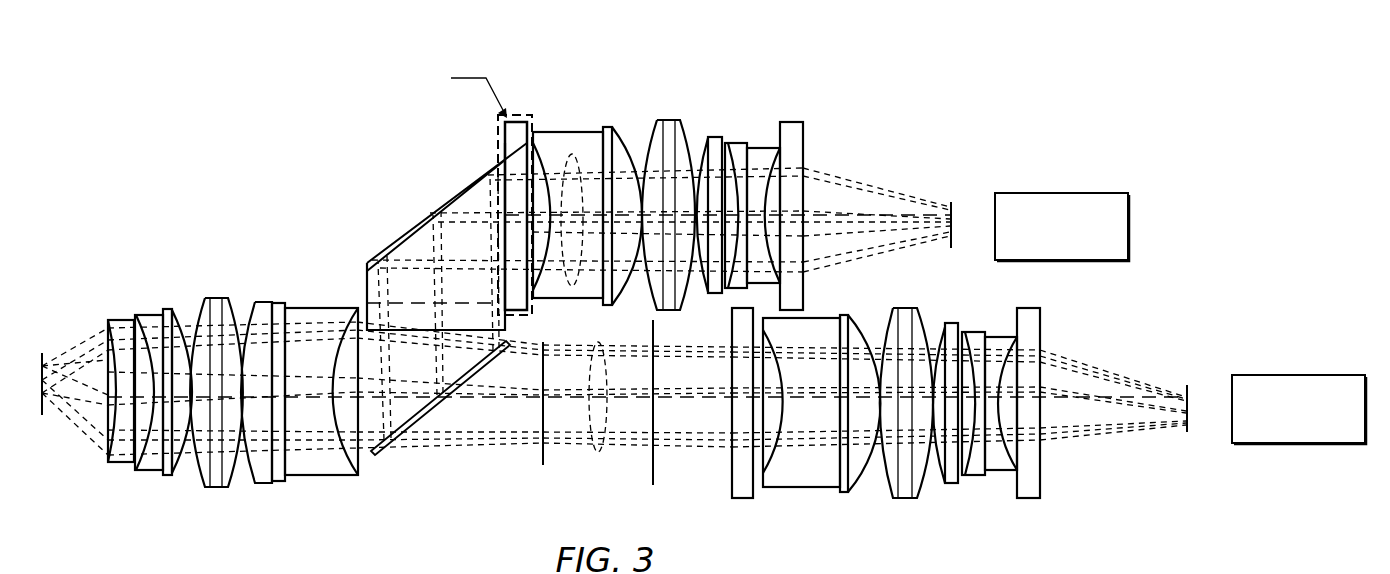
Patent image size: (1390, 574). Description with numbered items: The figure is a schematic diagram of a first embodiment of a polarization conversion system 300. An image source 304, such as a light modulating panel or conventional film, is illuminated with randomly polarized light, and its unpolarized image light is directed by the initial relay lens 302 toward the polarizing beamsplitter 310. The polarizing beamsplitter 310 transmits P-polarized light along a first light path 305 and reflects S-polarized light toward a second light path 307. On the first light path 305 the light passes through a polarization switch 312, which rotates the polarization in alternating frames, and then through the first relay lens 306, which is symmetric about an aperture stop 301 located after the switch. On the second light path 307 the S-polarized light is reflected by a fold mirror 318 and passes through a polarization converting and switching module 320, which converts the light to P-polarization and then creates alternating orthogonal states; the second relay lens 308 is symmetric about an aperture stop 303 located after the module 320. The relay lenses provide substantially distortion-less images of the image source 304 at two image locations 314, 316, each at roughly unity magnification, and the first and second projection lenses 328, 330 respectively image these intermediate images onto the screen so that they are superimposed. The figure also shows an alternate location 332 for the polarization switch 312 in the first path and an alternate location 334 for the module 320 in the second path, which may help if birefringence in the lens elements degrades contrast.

The polarization conversion system 300 is at (313, 101).
The aperture stop 301 is at (542, 454).
The initial relay lens 302 is at (357, 291).
The aperture stop 303 is at (417, 303).
The image source 304 is at (42, 416).
The first light path 305 is at (598, 458).
The first relay lens 306 is at (763, 507).
The second light path 307 is at (567, 186).
The second relay lens 308 is at (653, 173).
The polarizing beamsplitter 310 is at (387, 458).
The polarization switch 312 is at (742, 500).
The image location 314 is at (949, 244).
The image location 316 is at (1189, 430).
The fold mirror 318 is at (452, 193).
The polarization converting and switching module 320 is at (494, 138).
The first projection lens 328 is at (1062, 192).
The second projection lens 330 is at (1298, 444).
The alternate location for the polarization switch 332 is at (1028, 500).
The alternate location for the polarization converting and switching module 334 is at (803, 156).